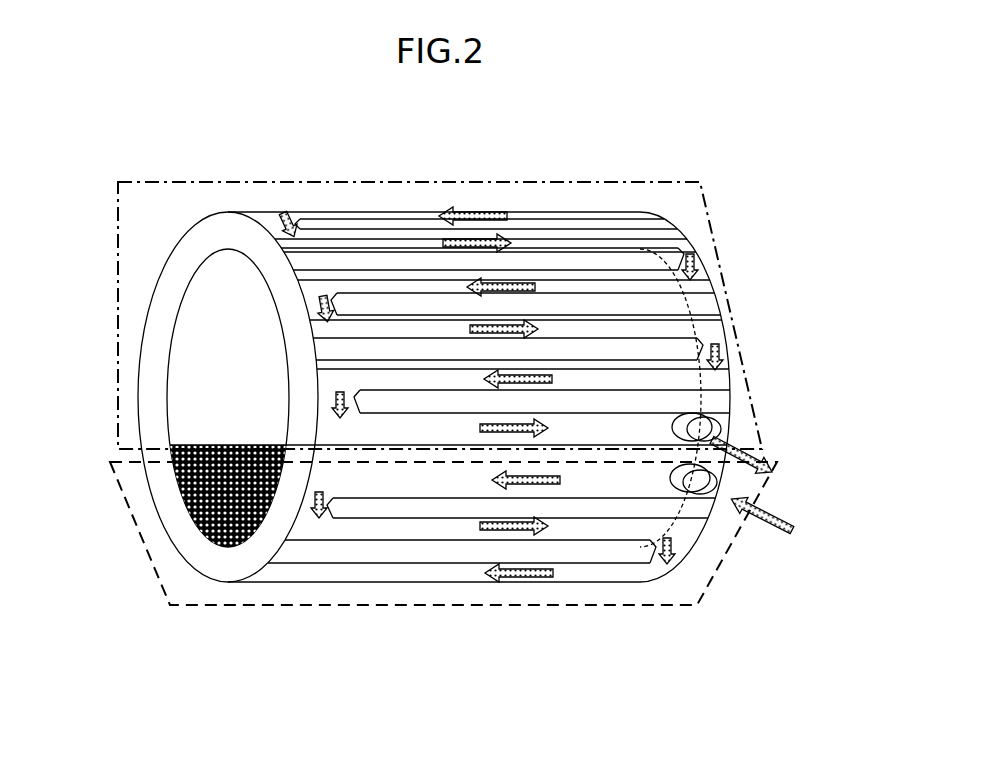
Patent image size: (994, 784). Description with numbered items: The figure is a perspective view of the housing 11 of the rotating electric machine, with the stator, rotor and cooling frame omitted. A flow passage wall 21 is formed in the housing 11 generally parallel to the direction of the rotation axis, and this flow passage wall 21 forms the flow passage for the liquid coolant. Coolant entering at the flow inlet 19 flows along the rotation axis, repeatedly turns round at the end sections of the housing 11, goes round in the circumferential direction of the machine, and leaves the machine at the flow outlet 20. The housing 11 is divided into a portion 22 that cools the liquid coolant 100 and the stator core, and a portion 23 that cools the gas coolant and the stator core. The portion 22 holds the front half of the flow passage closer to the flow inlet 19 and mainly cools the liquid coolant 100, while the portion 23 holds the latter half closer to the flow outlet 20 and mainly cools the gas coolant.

The housing 11 is at (393, 211).
The flow inlet 19 is at (710, 500).
The flow outlet 20 is at (694, 442).
The flow passage wall 21 is at (370, 566).
The portion that cools the liquid coolant 22 is at (232, 608).
The portion that cools the gas coolant 23 is at (243, 182).
The liquid coolant 100 is at (200, 483).